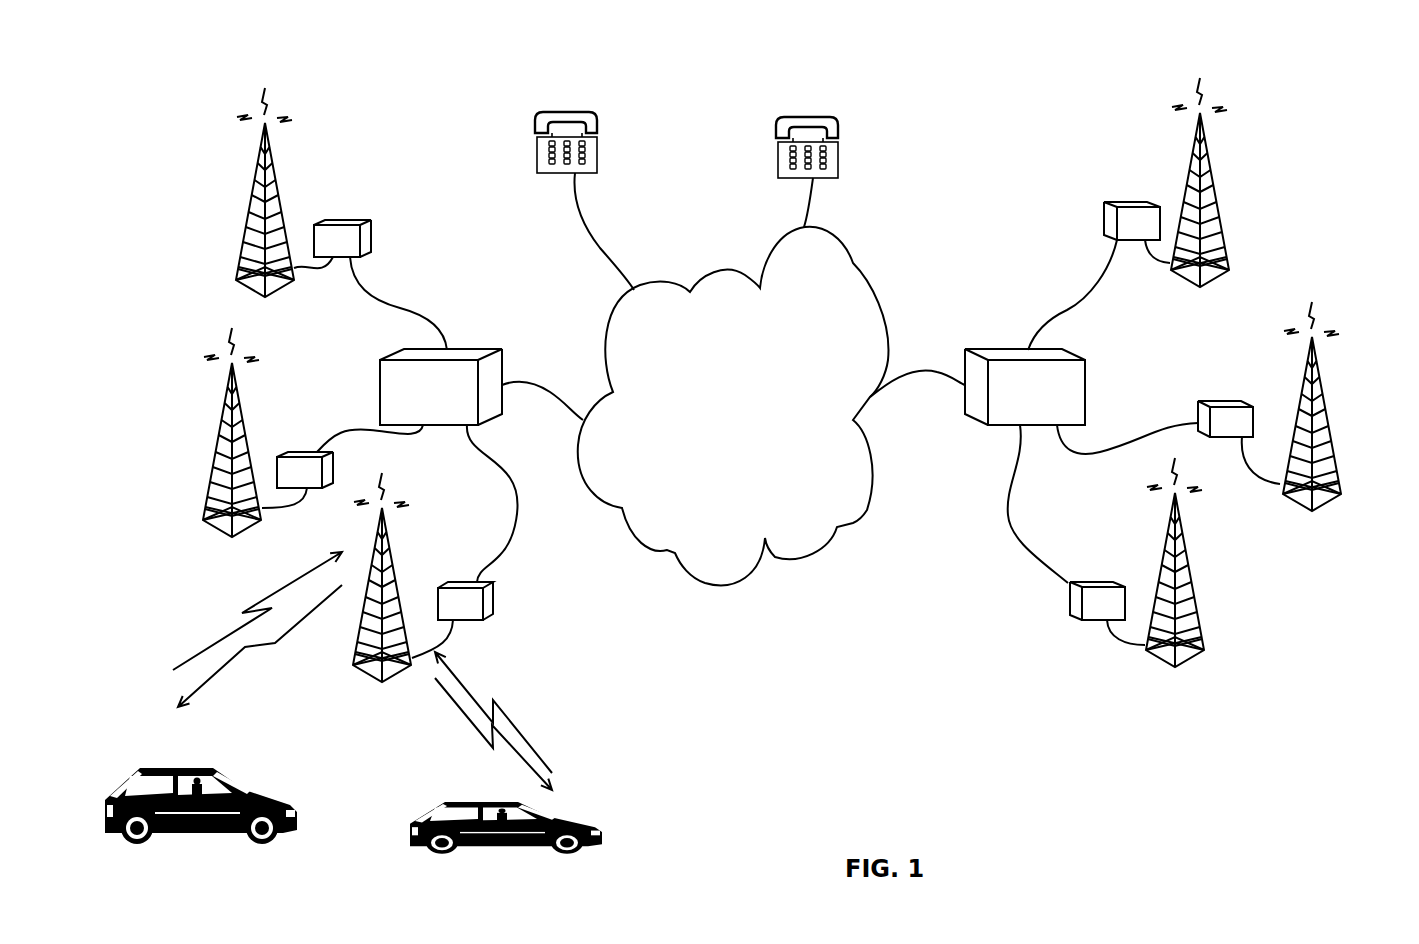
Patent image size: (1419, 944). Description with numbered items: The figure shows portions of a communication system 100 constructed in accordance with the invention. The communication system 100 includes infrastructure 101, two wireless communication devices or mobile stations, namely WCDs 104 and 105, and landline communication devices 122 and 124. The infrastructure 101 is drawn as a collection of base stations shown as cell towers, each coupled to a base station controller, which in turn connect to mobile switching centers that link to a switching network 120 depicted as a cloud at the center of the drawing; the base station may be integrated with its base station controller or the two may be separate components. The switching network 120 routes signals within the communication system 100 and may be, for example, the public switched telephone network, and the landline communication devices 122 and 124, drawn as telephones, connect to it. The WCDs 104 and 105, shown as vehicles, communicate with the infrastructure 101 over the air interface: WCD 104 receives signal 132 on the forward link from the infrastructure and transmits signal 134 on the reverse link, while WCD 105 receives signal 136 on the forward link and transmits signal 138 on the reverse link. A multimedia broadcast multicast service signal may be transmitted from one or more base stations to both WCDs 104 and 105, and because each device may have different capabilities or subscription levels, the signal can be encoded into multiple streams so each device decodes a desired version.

The communication system 100 is at (1363, 40).
The infrastructure 101 is at (813, 682).
The WCD (mobile station) 104 is at (285, 827).
The WCD (mobile station) 105 is at (597, 838).
The switching network 120 is at (853, 265).
The landline communication device 122 is at (832, 117).
The landline communication device 124 is at (583, 108).
The forward link signal 132 is at (282, 627).
The reverse link signal 134 is at (297, 580).
The forward link signal 136 is at (518, 760).
The reverse link signal 138 is at (512, 718).